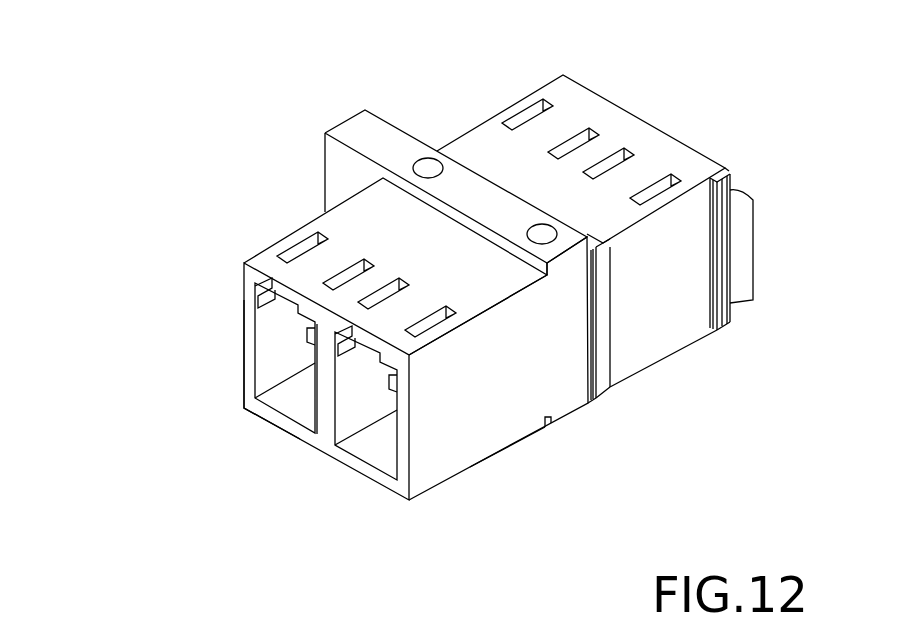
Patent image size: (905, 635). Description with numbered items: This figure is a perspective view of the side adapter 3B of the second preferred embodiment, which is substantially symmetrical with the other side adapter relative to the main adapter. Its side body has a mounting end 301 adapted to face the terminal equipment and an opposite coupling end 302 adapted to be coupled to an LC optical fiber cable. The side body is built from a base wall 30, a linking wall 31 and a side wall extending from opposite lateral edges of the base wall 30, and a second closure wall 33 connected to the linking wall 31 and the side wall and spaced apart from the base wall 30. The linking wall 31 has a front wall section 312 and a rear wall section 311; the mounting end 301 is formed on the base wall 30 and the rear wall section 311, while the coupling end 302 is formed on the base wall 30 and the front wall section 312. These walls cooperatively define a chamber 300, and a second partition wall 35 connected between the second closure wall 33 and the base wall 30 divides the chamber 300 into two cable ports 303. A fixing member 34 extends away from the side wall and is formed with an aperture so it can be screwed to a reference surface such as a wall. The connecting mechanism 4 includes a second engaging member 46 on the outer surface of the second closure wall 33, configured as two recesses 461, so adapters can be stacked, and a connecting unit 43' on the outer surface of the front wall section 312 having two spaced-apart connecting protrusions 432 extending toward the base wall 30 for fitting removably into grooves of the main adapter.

The side adapter 3B is at (210, 162).
The base wall 30 is at (383, 495).
The chamber 300 is at (233, 385).
The mounting end 301 is at (227, 362).
The coupling end 302 is at (703, 125).
The cable ports 303 is at (290, 415).
The linking wall 31 is at (442, 473).
The rear wall section 311 is at (495, 443).
The front wall section 312 is at (672, 340).
The second closure wall 33 is at (488, 125).
The fixing member 34 is at (340, 105).
The second partition wall 35 is at (328, 397).
The connecting mechanism 4 is at (683, 430).
The connecting unit 43' is at (780, 308).
The connecting protrusions 432 is at (607, 390).
The second engaging member 46 is at (428, 157).
The recesses 461 is at (533, 232).